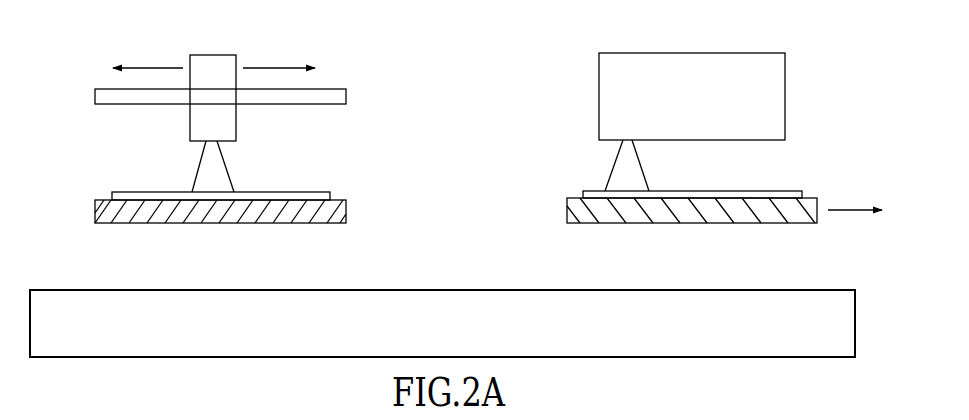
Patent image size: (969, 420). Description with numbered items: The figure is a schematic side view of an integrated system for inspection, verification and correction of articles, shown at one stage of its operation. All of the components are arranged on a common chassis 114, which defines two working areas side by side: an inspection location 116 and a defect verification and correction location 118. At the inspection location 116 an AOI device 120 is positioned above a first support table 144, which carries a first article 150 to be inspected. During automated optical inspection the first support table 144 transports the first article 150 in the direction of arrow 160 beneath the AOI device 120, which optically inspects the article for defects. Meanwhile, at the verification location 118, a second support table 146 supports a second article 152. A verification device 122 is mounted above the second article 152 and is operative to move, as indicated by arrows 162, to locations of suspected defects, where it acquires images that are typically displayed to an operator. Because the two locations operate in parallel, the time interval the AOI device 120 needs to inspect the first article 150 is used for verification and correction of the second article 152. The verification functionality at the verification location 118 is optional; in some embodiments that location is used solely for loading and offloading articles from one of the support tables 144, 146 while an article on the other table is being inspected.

The chassis 114 is at (470, 332).
The inspection location 116 is at (848, 124).
The defect verification and correction location 118 is at (377, 124).
The AOI device 120 is at (682, 53).
The verification device 122 is at (213, 55).
The first support table 144 is at (567, 212).
The second support table 146 is at (95, 212).
The first article 150 is at (705, 191).
The second article 152 is at (252, 192).
The arrow 160 is at (843, 210).
The arrows 162 is at (158, 66).